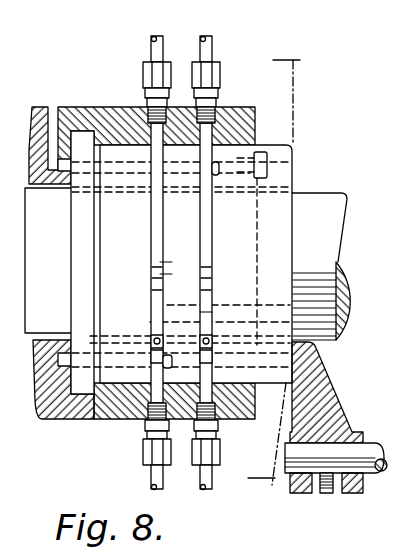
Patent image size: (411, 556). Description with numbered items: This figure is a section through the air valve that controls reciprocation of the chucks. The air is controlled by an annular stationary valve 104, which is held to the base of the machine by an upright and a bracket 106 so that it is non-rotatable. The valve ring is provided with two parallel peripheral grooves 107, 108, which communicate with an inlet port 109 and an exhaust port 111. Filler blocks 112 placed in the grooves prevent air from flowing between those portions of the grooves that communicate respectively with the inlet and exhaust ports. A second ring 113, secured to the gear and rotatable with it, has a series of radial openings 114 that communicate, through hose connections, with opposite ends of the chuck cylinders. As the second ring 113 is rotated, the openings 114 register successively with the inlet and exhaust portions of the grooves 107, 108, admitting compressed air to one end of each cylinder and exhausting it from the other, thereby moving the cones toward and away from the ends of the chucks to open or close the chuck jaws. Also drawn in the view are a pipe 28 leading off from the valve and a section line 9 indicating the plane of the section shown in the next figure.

The section line 9- 9 is at (274, 267).
The pipe 28 is at (313, 197).
The annular stationary valve 104 is at (290, 164).
The bracket 106 is at (337, 395).
The peripheral groove 107 is at (151, 244).
The peripheral groove 108 is at (212, 223).
The inlet port 109 is at (226, 292).
The exhaust port 111 is at (110, 172).
The filler block 112 is at (160, 268).
The second ring 113 is at (264, 103).
The radial opening 114 is at (165, 115).